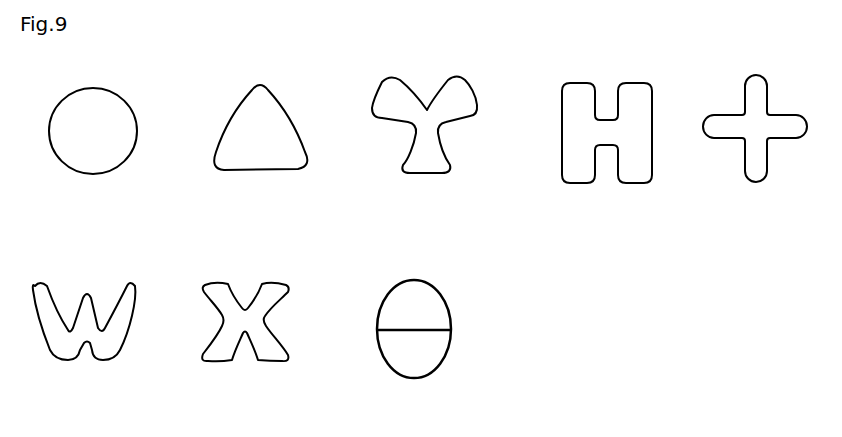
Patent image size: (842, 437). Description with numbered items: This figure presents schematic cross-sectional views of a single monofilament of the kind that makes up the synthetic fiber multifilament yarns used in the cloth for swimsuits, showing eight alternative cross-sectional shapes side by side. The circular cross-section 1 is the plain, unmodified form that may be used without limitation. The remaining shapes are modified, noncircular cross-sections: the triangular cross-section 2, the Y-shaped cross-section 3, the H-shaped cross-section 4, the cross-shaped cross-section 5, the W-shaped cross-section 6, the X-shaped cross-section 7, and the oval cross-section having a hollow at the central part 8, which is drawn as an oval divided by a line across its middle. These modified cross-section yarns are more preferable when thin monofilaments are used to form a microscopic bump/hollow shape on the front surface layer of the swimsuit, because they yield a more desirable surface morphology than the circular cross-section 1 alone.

The circular cross-section 1 is at (93, 150).
The triangular cross-section 2 is at (260, 150).
The Y-shaped cross-section 3 is at (424, 146).
The H-shaped cross-section 4 is at (607, 150).
The cross-shaped cross-section 5 is at (755, 146).
The W-shaped cross-section 6 is at (84, 343).
The X-shaped cross-section 7 is at (245, 343).
The oval cross-section having a hollow at the central part 8 is at (414, 346).